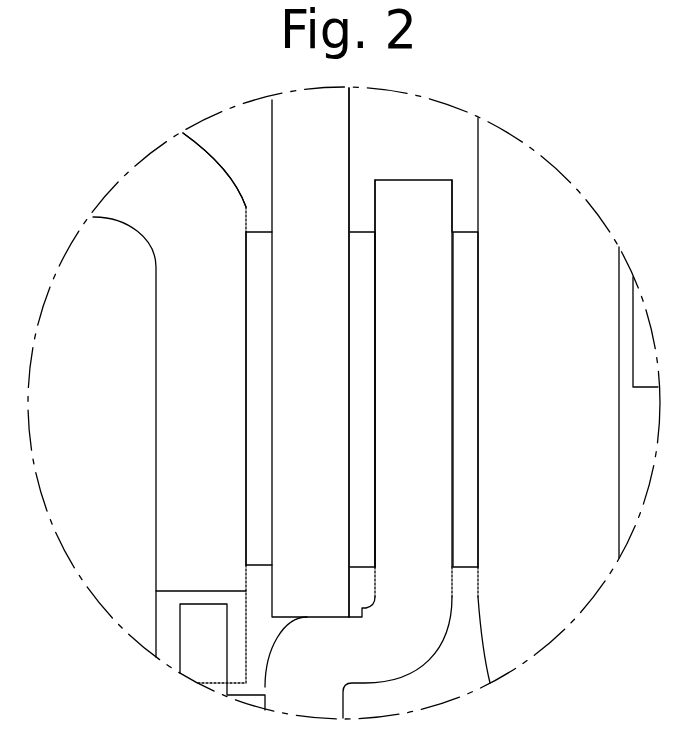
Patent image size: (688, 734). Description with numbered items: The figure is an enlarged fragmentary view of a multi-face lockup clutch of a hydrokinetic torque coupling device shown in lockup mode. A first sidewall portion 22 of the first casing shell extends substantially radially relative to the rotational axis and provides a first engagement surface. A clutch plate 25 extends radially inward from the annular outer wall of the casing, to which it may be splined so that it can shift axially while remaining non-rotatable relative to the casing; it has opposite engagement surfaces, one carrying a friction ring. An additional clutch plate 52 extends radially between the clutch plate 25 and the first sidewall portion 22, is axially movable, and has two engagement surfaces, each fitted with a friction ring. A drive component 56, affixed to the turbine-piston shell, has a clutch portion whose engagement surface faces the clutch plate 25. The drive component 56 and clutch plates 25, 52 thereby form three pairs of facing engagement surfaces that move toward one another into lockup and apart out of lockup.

The first sidewall portion 22 is at (558, 502).
The clutch plate 25 is at (325, 203).
The additional clutch plate 52 is at (433, 205).
The drive component 56 is at (183, 397).